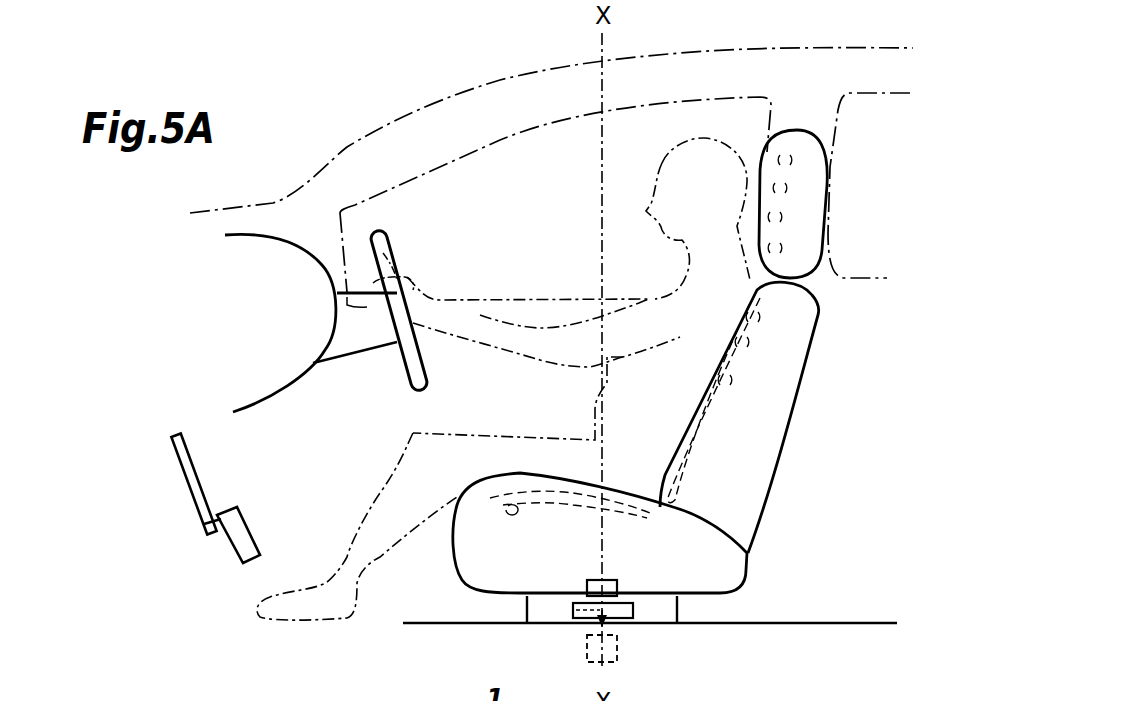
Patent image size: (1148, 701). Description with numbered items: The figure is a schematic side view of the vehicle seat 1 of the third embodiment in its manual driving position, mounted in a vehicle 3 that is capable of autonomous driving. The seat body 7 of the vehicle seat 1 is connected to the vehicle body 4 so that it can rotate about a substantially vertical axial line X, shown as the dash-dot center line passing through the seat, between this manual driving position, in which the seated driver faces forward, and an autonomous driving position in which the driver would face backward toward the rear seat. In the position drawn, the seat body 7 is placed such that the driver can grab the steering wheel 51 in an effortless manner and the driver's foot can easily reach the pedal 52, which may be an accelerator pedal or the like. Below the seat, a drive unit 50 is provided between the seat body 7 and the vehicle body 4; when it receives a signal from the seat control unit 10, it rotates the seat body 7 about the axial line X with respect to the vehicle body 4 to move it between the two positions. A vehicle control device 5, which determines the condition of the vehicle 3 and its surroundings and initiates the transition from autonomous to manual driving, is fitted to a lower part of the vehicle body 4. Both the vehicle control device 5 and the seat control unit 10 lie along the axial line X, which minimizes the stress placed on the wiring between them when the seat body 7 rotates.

The vehicle seat 1 is at (805, 122).
The vehicle 3 is at (393, 100).
The vehicle body 4 is at (804, 634).
The vehicle control device 5 is at (617, 650).
The seat body 7 is at (800, 421).
The seat control unit 10 is at (617, 587).
The drive unit 50 is at (633, 612).
The steering wheel 51 is at (398, 240).
The pedal 52 is at (243, 535).